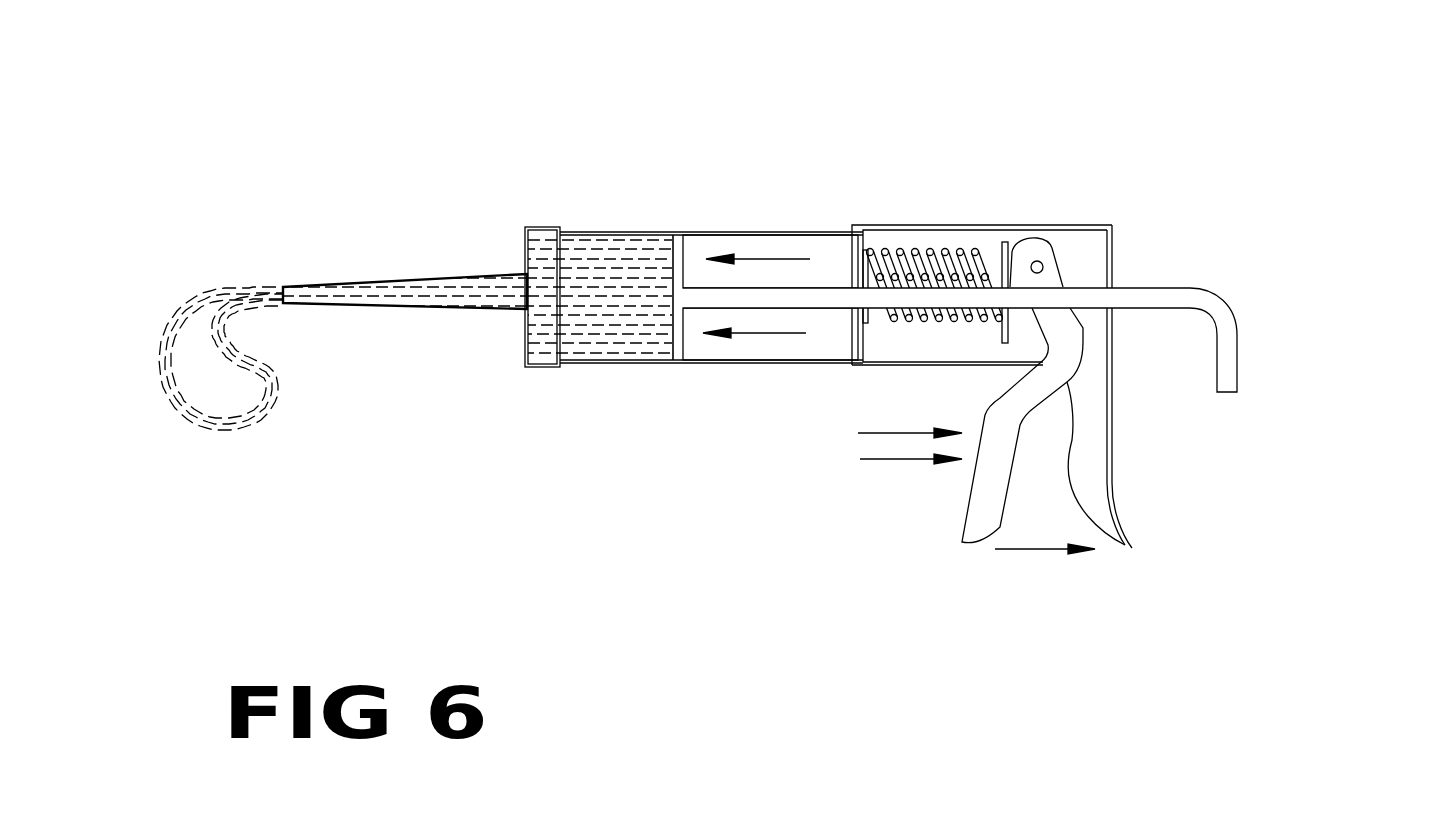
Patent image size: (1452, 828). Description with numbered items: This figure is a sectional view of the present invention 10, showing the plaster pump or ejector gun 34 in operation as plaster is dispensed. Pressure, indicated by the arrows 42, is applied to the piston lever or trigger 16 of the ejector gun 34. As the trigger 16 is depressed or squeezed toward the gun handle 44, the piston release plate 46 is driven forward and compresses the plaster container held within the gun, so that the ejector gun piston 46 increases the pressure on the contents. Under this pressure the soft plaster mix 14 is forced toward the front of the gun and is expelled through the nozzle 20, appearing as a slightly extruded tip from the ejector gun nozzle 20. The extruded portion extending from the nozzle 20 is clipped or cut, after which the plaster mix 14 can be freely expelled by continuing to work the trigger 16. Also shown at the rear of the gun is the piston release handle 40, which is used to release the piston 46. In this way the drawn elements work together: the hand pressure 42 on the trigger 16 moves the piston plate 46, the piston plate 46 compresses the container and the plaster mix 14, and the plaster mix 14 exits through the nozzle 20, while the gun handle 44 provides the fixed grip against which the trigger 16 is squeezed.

The present invention 10 is at (1179, 619).
The plaster mix 14 is at (222, 430).
The piston lever or trigger 16 is at (963, 517).
The pump nozzle 20 is at (318, 287).
The plaster pump gun 34 is at (980, 222).
The piston release handle 40 is at (1237, 348).
The pressure arrows 42 is at (877, 444).
The gun handle 44 is at (604, 257).
The piston release plate 46 is at (681, 253).